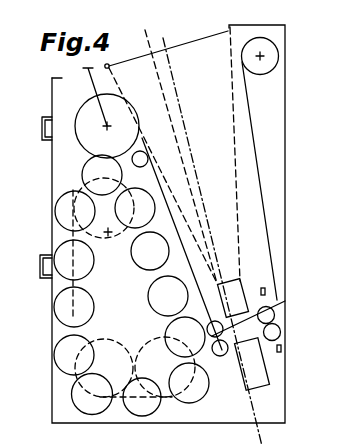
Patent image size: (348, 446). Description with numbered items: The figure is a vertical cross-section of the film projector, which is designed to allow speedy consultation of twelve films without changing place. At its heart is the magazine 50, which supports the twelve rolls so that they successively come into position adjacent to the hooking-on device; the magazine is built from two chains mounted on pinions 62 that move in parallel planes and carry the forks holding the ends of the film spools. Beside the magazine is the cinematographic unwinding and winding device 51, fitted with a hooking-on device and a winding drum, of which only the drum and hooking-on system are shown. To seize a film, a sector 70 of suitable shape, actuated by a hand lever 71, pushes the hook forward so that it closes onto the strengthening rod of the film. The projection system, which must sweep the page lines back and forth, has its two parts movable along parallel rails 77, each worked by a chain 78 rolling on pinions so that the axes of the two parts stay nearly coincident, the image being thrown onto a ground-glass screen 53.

The magazine 50 is at (158, 280).
The cinematographic unwinding and winding device 51 is at (276, 60).
The screen 53 is at (184, 43).
The pinions 62 is at (108, 236).
The sector 70 is at (78, 136).
The hand lever 71 is at (86, 60).
The parallel rails 77 is at (248, 282).
The chain 78 is at (282, 346).